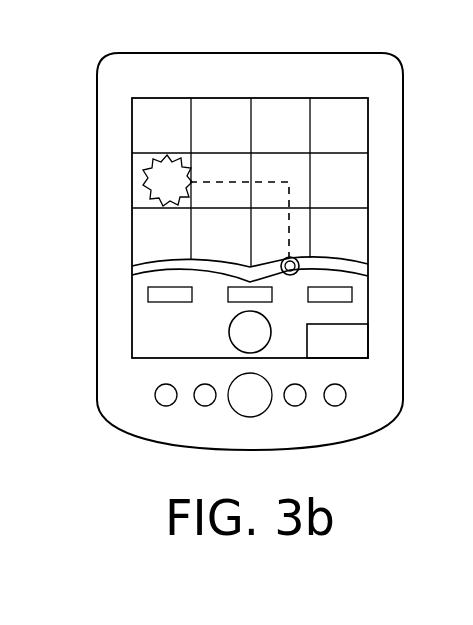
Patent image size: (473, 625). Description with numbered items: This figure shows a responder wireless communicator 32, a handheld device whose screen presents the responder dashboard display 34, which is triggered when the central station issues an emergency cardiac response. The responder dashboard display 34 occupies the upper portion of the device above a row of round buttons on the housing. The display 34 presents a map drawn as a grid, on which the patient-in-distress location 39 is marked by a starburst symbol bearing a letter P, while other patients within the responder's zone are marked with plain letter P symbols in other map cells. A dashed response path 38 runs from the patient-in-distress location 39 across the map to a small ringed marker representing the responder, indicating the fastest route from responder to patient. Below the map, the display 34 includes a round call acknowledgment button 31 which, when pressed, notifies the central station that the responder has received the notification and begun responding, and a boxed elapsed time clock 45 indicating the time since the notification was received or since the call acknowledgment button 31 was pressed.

The responder wireless communicator 32 is at (83, 113).
The responder dashboard display 34 is at (358, 124).
The patient-in-distress location 39 is at (148, 176).
The response path 38 is at (289, 228).
The call acknowledgment button 31 is at (229, 331).
The elapsed time clock 45 is at (368, 330).